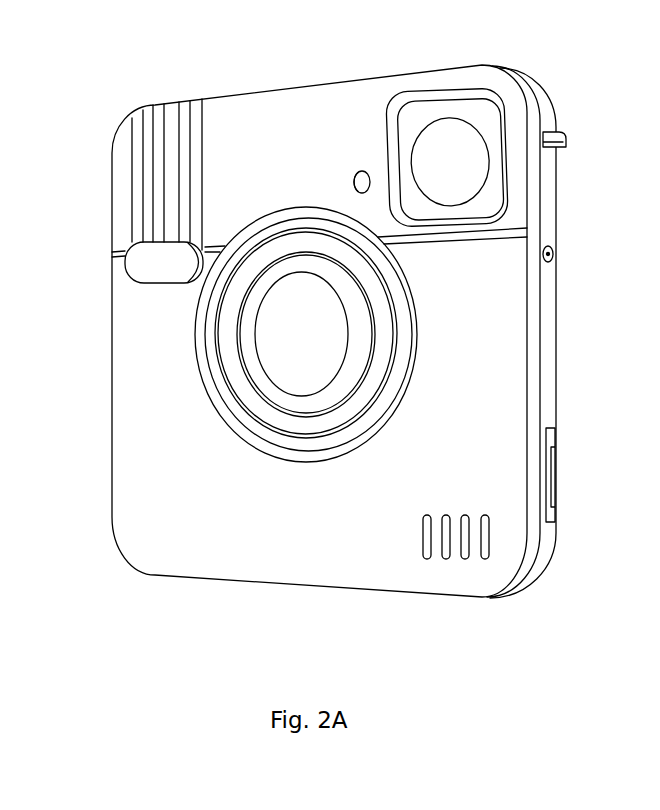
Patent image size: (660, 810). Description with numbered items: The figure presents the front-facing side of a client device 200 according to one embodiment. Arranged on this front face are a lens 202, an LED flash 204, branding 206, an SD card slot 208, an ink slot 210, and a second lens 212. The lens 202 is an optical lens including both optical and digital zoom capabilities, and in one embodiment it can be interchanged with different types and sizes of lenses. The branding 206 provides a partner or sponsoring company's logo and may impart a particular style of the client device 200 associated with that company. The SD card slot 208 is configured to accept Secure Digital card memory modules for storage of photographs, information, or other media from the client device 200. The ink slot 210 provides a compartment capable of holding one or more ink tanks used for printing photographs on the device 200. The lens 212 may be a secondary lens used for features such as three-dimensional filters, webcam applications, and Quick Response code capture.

The client device 200 is at (263, 583).
The lens 202 is at (213, 334).
The LED flash 204 is at (352, 179).
The branding 206 is at (316, 104).
The SD card slot 208 is at (548, 472).
The ink slot 210 is at (556, 258).
The lens 212 is at (467, 145).